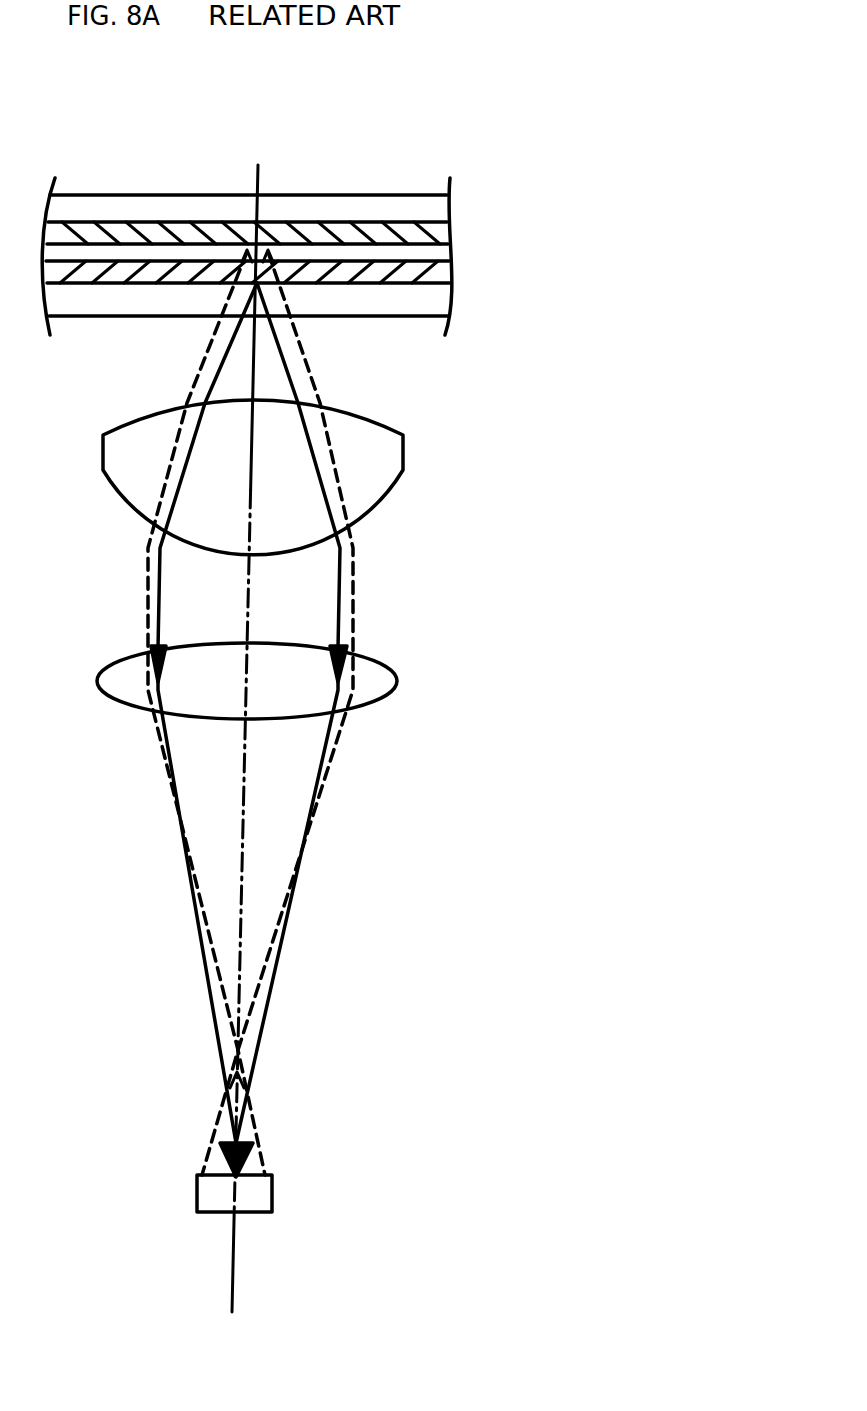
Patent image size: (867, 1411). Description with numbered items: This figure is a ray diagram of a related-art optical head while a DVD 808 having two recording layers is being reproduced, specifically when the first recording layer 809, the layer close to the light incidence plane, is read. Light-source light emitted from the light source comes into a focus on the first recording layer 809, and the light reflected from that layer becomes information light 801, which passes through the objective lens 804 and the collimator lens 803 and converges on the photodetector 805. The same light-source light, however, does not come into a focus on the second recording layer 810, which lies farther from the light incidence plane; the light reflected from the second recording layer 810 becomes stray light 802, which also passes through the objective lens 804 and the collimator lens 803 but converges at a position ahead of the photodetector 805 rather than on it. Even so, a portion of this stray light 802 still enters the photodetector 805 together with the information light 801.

The information light 801 is at (270, 1012).
The stray light 802 is at (257, 1137).
The collimator lens 803 is at (378, 683).
The objective lens 804 is at (387, 452).
The photodetector 805 is at (257, 1195).
The DVD 808 is at (355, 205).
The first recording layer 809 is at (442, 273).
The second recording layer 810 is at (437, 237).